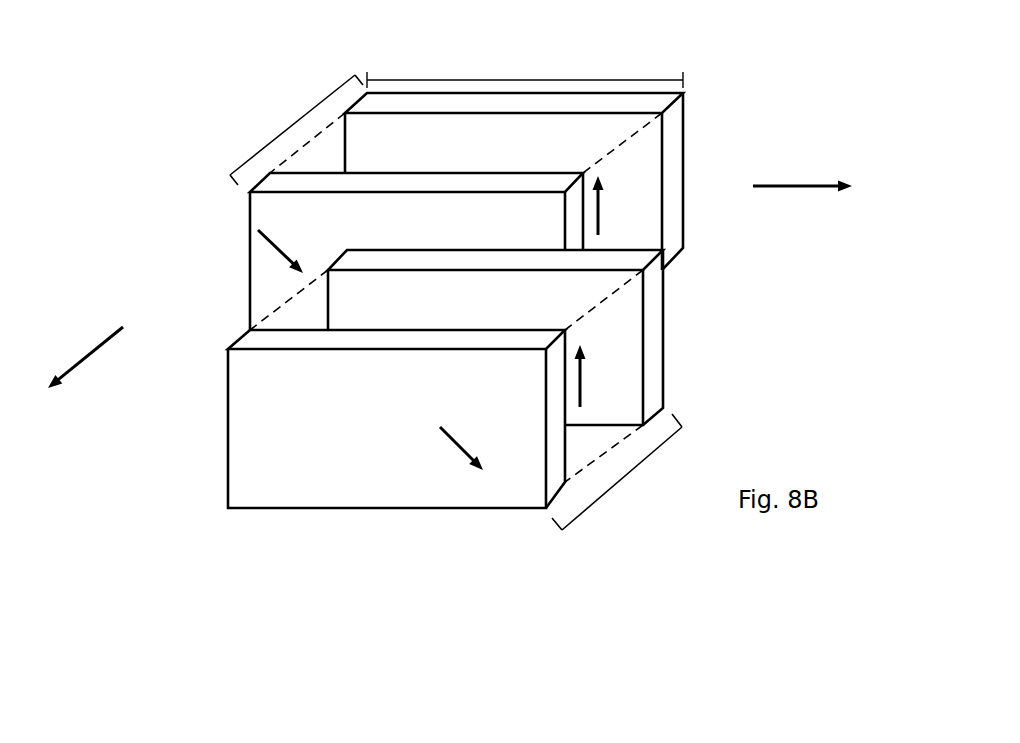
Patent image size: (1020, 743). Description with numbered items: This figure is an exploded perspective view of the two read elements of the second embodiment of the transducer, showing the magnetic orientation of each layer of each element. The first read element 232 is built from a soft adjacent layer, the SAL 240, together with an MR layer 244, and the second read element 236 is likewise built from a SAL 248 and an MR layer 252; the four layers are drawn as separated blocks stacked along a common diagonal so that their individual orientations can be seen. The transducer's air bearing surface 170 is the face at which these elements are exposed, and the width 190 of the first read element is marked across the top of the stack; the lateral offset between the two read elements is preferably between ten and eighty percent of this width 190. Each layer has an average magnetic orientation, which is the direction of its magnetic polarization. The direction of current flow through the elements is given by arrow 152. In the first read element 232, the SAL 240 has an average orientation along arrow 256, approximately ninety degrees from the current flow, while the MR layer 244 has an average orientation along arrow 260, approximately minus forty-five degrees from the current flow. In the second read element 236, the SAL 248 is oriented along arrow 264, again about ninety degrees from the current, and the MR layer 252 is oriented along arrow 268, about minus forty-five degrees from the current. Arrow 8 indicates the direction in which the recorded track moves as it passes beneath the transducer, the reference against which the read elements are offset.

The arrow indicating track movement direction 8 is at (92, 353).
The arrow indicating direction of current flow 152 is at (795, 188).
The air bearing surface 170 is at (463, 300).
The width of the first read element 190 is at (570, 80).
The first read element 232 is at (287, 123).
The second read element 236 is at (618, 485).
The soft adjacent layer 240 is at (677, 118).
The MR layer 244 is at (250, 287).
The SAL 248 is at (652, 370).
The MR layer 252 is at (247, 461).
The arrow indicating average magnetic orientation of the SAL of the first read eleme 256 is at (598, 223).
The arrow indicating average magnetic orientation of the MR layer of the first read 260 is at (285, 247).
The arrow indicating average magnetic orientation of the SAL of the second read elem 264 is at (582, 395).
The arrow indicating average magnetic orientation of the MR layer of the second read 268 is at (465, 445).